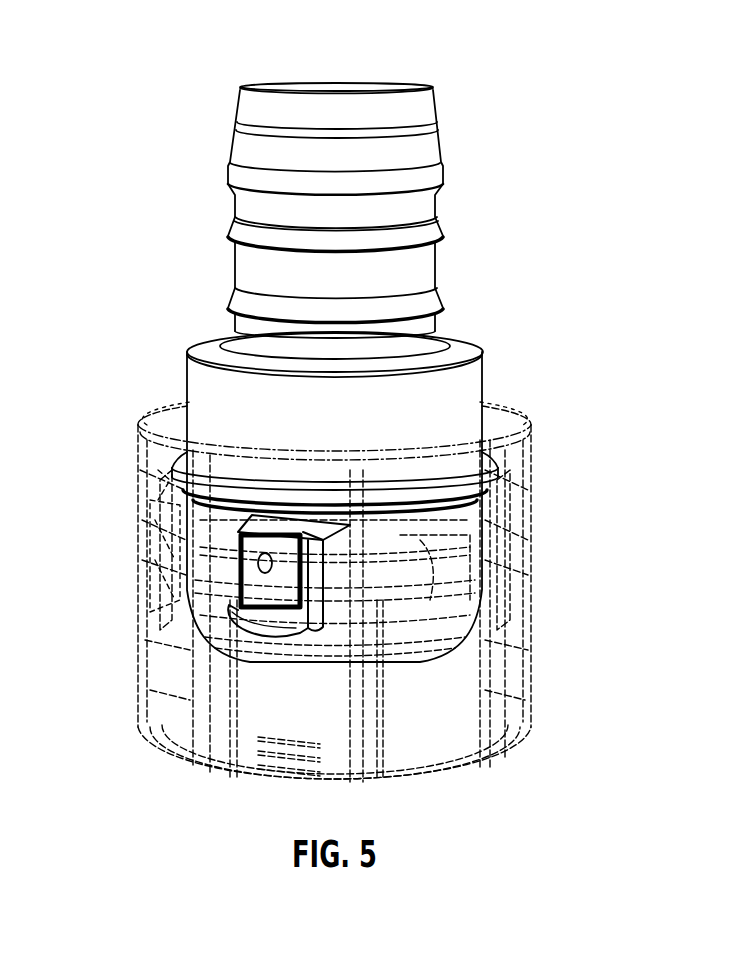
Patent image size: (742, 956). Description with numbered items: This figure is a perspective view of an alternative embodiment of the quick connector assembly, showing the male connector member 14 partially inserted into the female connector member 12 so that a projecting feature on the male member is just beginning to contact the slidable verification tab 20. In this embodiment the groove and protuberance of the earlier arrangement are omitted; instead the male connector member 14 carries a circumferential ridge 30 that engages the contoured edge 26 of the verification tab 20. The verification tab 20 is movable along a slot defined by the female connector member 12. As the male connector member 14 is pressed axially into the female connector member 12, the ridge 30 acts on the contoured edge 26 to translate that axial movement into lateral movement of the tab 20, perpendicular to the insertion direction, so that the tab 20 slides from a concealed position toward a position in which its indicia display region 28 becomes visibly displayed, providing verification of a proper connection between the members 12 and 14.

The female connector member 12 is at (520, 640).
The male connector member 14 is at (427, 150).
The verification tab 20 is at (152, 586).
The contoured edge 26 is at (300, 527).
The indicia display region 28 is at (303, 573).
The circumferential ridge 30 is at (496, 478).